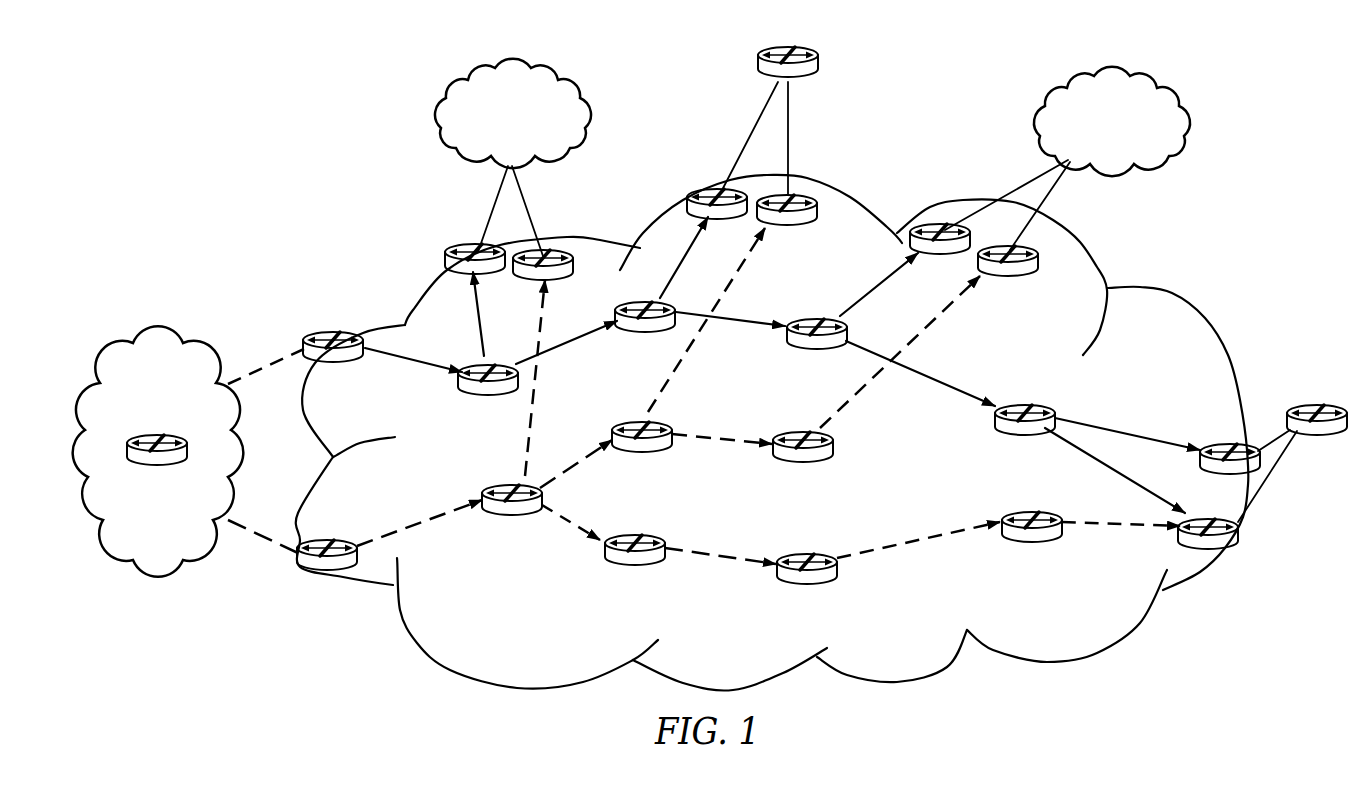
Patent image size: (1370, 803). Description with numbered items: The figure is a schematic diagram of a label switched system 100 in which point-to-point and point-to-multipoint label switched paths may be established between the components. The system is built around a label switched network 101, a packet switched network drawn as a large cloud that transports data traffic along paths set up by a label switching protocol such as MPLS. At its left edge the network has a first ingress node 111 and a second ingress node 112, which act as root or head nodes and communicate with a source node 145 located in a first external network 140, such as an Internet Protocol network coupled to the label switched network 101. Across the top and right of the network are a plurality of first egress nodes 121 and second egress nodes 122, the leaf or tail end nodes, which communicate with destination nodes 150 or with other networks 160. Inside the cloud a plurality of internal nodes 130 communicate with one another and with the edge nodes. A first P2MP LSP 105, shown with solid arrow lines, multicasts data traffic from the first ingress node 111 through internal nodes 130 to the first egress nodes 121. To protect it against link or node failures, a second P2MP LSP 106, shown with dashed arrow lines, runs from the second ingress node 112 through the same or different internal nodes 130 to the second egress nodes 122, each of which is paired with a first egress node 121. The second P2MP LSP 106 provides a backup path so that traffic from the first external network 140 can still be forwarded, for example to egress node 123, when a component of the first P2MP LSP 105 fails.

The label switched system 100 is at (252, 138).
The label switched network 101 is at (1175, 293).
The first P2MP LSP 105 is at (476, 330).
The second P2MP LSP 106 is at (938, 315).
The first ingress node 111 is at (340, 362).
The second ingress node 112 is at (330, 530).
The first egress nodes 121 is at (460, 248).
The second egress nodes 122 is at (552, 250).
The egress node 123 is at (1185, 538).
The internal nodes 130 is at (478, 388).
The first external network 140 is at (210, 340).
The source node 145 is at (160, 458).
The destination nodes 150 is at (812, 72).
The other networks 160 is at (812, 157).